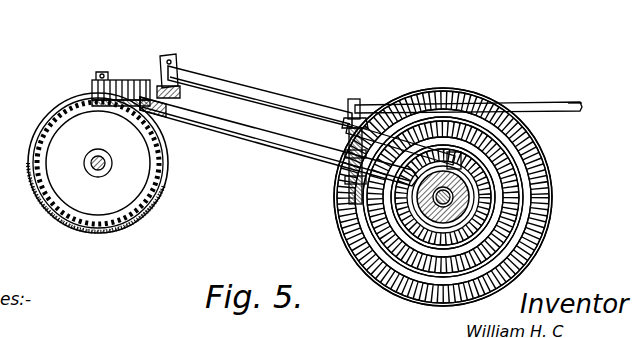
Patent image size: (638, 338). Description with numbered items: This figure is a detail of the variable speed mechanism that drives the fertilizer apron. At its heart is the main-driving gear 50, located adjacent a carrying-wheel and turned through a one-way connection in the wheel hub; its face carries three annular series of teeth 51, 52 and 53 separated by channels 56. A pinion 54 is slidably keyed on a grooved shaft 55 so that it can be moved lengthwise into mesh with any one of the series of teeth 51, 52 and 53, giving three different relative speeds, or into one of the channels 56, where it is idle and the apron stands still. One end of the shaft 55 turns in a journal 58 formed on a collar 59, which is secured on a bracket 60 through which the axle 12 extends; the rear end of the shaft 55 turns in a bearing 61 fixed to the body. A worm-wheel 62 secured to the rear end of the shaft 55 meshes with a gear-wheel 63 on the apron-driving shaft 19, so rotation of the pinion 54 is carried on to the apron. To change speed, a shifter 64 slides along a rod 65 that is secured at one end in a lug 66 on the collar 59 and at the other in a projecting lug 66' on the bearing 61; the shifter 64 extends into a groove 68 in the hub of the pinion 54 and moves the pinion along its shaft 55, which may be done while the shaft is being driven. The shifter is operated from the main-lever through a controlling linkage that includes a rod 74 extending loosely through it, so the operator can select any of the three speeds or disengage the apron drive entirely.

The axle 12 is at (466, 280).
The apron-driving shaft 19 is at (104, 168).
The main-driving gear 50 is at (548, 210).
The annular series of teeth 51 is at (540, 161).
The annular series of teeth 52 is at (545, 247).
The annular series of teeth 53 is at (550, 185).
The pinion 54 is at (345, 186).
The shaft 55 is at (278, 148).
The channels 56 is at (384, 284).
The journal 58 is at (350, 236).
The collar 59 is at (420, 265).
The bracket 60 is at (560, 226).
The bearing 61 is at (170, 121).
The worm-wheel 62 is at (118, 80).
The gear-wheel 63 is at (101, 210).
The shifter 64 is at (347, 113).
The rod 65 is at (262, 96).
The lug 66 is at (468, 101).
The projecting lug 66' is at (177, 65).
The groove 68 is at (345, 193).
The rod 74 is at (577, 103).